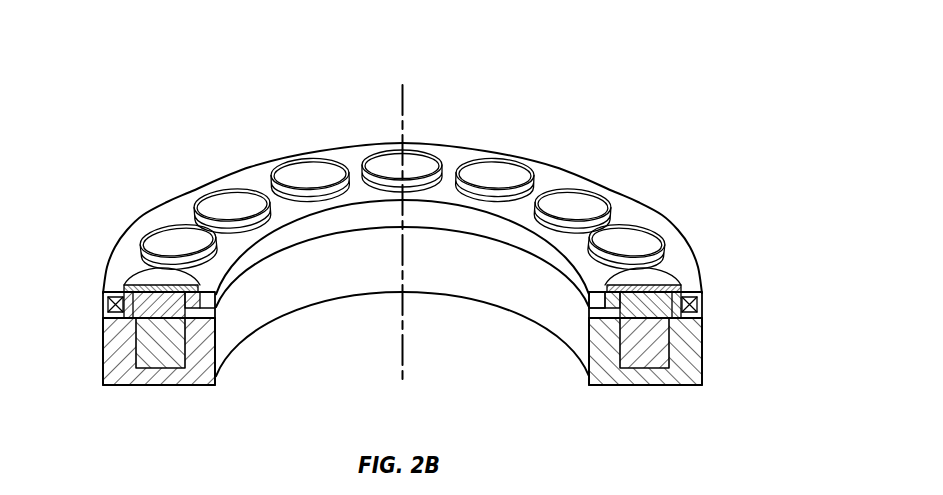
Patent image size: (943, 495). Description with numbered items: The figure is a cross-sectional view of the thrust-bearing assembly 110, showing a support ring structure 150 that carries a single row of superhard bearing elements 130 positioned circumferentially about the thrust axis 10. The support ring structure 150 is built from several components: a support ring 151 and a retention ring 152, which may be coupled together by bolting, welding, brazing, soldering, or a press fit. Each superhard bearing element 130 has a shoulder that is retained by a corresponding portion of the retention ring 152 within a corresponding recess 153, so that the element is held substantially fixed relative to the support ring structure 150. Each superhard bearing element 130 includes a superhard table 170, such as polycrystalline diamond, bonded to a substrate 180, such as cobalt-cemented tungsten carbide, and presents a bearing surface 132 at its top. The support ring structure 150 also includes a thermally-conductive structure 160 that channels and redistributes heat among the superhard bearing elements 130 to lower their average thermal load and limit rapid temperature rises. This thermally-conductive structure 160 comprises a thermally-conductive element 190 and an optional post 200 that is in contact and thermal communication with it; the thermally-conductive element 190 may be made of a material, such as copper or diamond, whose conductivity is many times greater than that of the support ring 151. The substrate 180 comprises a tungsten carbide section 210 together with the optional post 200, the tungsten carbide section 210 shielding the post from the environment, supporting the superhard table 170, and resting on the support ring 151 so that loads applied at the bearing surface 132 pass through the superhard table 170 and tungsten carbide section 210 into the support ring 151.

The thrust axis 10 is at (403, 110).
The thrust-bearing assembly 110 is at (669, 161).
The superhard bearing elements 130 is at (680, 240).
The bearing surface 132 is at (565, 195).
The support ring structure 150 is at (728, 387).
The support ring 151 is at (690, 373).
The retention ring 152 is at (702, 305).
The recesses 153 is at (586, 304).
The thermally-conductive structure 160 is at (216, 384).
The superhard table 170 is at (139, 285).
The substrate 180 is at (103, 306).
The thermally-conductive element 190 is at (199, 361).
The optional post 200 is at (216, 306).
The tungsten carbide section 210 is at (103, 343).